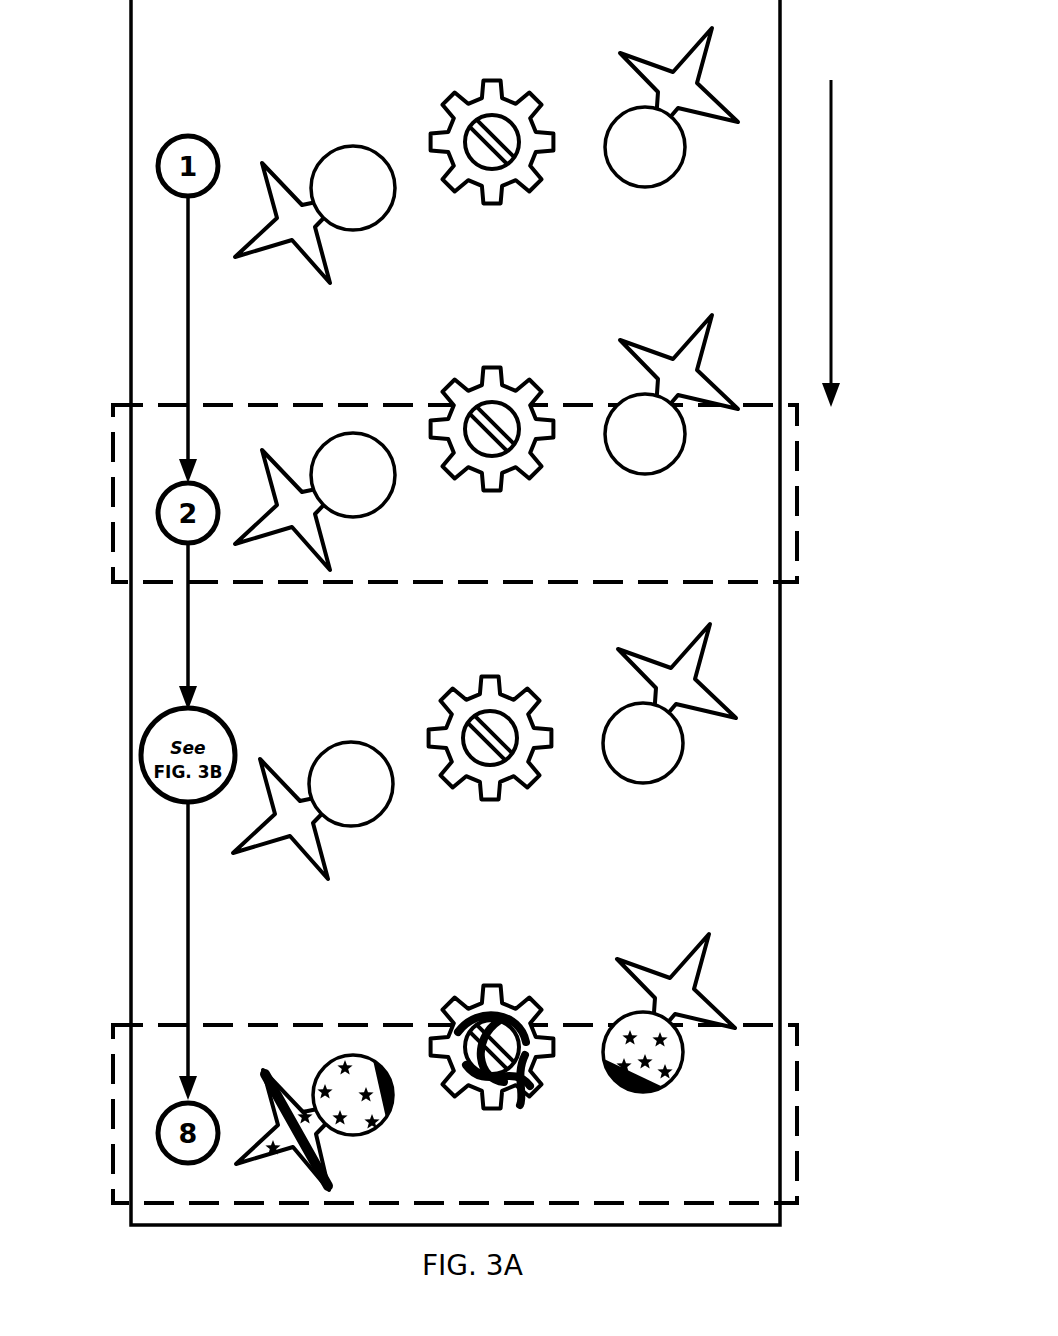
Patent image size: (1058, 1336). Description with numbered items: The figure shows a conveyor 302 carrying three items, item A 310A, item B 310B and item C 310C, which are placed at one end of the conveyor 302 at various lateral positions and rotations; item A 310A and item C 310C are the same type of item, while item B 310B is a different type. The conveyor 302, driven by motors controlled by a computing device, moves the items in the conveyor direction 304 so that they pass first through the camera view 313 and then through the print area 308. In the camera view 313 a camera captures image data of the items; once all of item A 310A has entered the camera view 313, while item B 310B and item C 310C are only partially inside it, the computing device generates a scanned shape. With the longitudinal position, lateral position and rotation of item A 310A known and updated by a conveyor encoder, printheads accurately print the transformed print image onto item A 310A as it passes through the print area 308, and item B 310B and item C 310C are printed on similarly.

The conveyor 302 is at (455, 612).
The conveyor direction 304 is at (878, 243).
The print area 308 is at (113, 1040).
The camera view 313 is at (113, 420).
The item A 310A is at (314, 668).
The item B 310B is at (477, 567).
The item C 310C is at (670, 560).